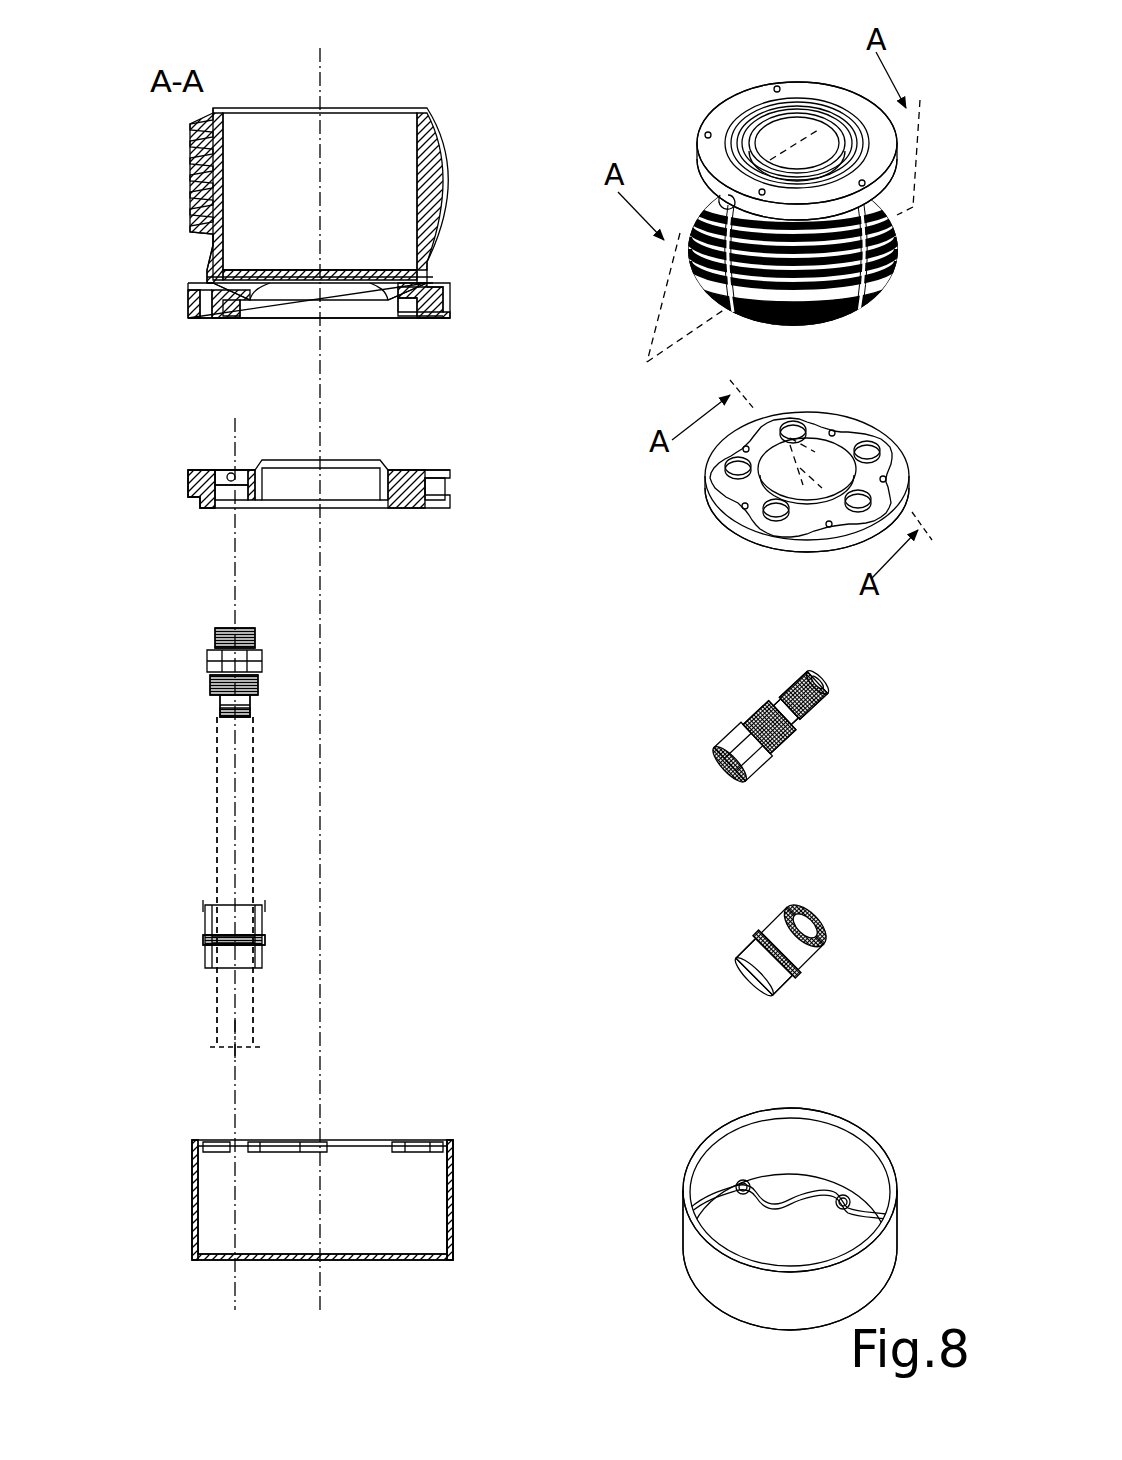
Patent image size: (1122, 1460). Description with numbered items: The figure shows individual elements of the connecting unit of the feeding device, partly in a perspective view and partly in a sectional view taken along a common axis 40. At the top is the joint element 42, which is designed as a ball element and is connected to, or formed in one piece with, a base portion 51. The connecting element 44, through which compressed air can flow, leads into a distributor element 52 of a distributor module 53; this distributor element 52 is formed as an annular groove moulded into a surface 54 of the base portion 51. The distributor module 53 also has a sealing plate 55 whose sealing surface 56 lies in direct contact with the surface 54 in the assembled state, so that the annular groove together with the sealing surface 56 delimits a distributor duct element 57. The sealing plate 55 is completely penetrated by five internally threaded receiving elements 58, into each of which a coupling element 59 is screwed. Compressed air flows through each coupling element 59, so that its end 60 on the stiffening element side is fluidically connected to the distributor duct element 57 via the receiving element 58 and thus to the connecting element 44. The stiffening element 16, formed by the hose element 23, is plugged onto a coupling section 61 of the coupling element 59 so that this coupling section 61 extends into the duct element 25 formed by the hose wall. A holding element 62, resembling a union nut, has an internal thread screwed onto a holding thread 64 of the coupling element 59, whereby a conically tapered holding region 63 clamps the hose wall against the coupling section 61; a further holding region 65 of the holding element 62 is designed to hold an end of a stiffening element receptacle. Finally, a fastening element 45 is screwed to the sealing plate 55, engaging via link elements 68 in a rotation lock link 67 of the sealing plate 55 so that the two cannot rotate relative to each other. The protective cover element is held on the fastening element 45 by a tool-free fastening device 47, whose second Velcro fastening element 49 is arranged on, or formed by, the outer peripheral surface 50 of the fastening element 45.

The longitudinal axis 40 is at (316, 70).
The joint element 42 is at (436, 114).
The connecting element 44 is at (450, 298).
The base portion 51 is at (186, 296).
The distributor element 52 is at (521, 213).
The distributor duct element 57 is at (233, 313).
The surface 54 is at (436, 322).
The distributor module 53 is at (464, 485).
The sealing plate 55 is at (190, 482).
The sealing surface 56 is at (210, 463).
The receiving element 58 is at (252, 516).
The rotation lock link 67 is at (724, 495).
The coupling element 59 is at (204, 660).
The end on the stiffening element side 60 is at (208, 740).
The coupling section 61 is at (228, 706).
The holding thread 64 is at (798, 745).
The stiffening element 16 is at (159, 882).
The hose element 23 is at (215, 850).
The duct element 25 is at (240, 1022).
The holding element 62 is at (204, 950).
The holding region 63 is at (205, 960).
The further holding region 65 is at (748, 955).
The fastening element 45 is at (180, 1228).
The fastening device 47 is at (544, 1235).
The second Velcro fastening element 49 is at (456, 1230).
The outer peripheral surface 50 is at (458, 1183).
The link elements 68 is at (287, 1154).